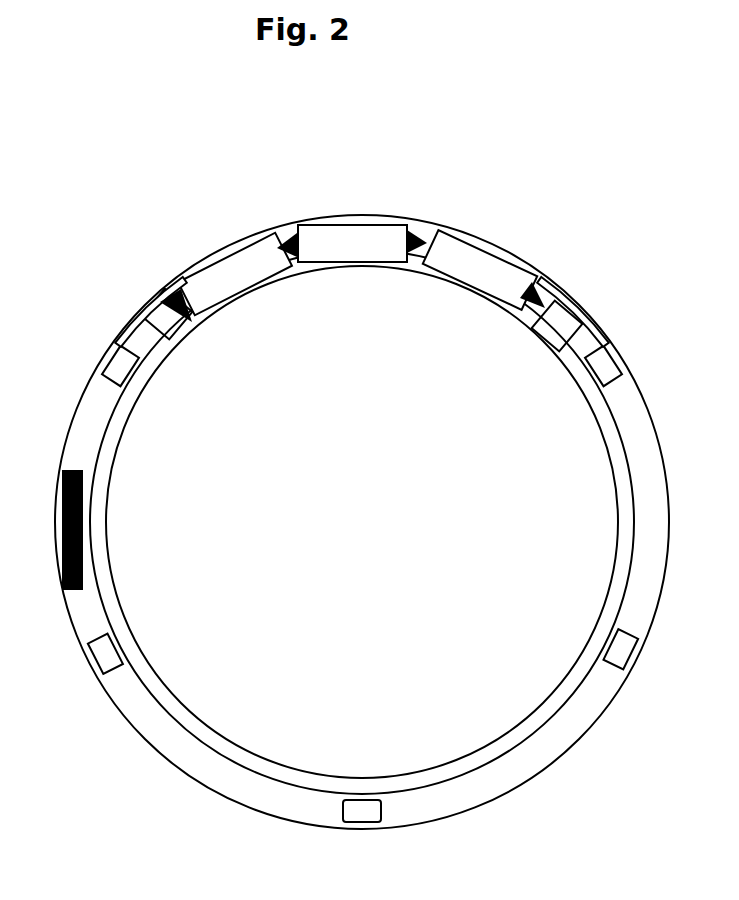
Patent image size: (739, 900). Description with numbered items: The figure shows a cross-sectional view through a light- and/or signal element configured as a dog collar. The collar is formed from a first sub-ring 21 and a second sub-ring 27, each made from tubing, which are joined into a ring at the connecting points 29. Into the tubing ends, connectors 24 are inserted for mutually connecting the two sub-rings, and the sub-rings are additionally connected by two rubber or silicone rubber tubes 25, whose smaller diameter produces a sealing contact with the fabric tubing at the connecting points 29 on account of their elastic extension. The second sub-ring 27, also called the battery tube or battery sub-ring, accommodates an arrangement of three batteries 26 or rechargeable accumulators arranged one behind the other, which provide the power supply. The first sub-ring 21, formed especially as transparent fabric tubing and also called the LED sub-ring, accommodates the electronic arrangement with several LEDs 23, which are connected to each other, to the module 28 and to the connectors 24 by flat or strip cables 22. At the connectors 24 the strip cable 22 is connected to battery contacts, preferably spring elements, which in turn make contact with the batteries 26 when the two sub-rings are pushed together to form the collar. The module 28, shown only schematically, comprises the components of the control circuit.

The first sub-ring 21 is at (582, 742).
The strip cable 22 is at (492, 767).
The LEDs 23 is at (606, 640).
The connectors 24 is at (537, 348).
The rubber or silicone rubber tubes 25 is at (500, 330).
The batteries 26 is at (460, 296).
The second sub-ring 27 is at (498, 244).
The module 28 is at (88, 527).
The connecting points 29 is at (128, 292).